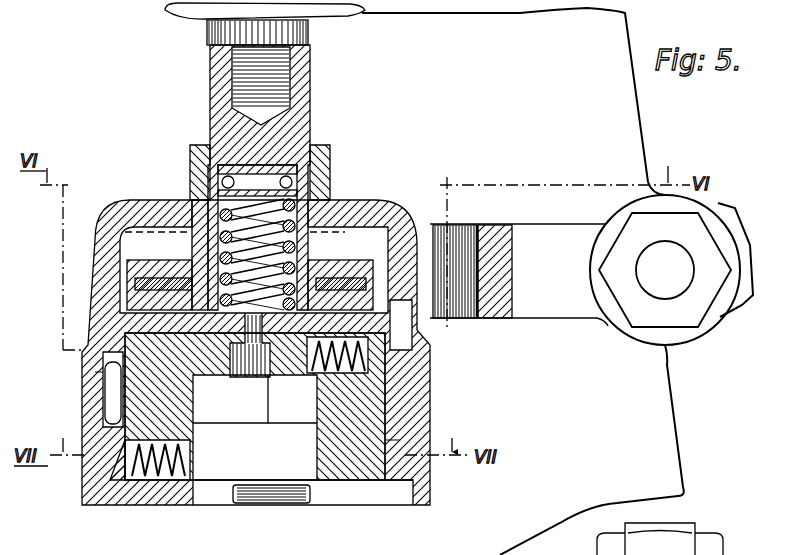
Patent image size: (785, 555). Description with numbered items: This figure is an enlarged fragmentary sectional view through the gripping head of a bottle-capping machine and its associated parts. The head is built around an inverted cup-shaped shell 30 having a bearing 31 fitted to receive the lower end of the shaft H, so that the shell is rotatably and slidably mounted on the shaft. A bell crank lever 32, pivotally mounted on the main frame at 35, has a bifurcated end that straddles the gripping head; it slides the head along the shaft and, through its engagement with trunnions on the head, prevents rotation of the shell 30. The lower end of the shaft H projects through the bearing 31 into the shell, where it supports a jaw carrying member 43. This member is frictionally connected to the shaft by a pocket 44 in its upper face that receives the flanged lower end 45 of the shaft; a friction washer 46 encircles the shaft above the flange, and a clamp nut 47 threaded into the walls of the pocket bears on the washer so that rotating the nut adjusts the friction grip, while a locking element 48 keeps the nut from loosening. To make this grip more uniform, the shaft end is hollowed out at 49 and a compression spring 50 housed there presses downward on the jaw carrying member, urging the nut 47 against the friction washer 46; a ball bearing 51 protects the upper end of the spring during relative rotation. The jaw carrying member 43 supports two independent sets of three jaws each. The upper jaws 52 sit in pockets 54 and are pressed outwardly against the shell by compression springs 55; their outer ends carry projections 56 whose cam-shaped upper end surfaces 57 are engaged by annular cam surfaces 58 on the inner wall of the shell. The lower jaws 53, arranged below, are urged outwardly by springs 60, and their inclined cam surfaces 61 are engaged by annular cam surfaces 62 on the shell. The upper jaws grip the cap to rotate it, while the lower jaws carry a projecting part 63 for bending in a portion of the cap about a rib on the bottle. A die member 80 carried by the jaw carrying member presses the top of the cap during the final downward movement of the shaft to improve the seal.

The shaft H is at (310, 40).
The inverted cup-shaped shell 30 is at (374, 216).
The bearing 31 is at (312, 176).
The bell crank lever 32 is at (565, 306).
The pivot 35 is at (671, 270).
The jaw carrying member 43 is at (388, 442).
The pocket 44 is at (125, 292).
The flanged lower end 45 is at (330, 277).
The friction washer 46 is at (137, 255).
The clamp nut 47 is at (177, 262).
The locking element 48 is at (392, 232).
The hollowed out lower end 49 is at (215, 255).
The compression spring 50 is at (300, 256).
The ball bearing 51 is at (312, 150).
The upper jaws 52 is at (250, 407).
The lower jaws 53 is at (338, 498).
The pockets 54 is at (328, 404).
The compression springs 55 is at (293, 377).
The projections 56 is at (398, 388).
The cam-shaped upper end surfaces 57 is at (420, 373).
The annular cam surfaces 58 is at (405, 355).
The springs 60 is at (195, 446).
The inclined cam surfaces 61 is at (82, 492).
The annular cam surfaces 62 is at (95, 466).
The projecting part 63 is at (187, 492).
The die member 80 is at (257, 380).